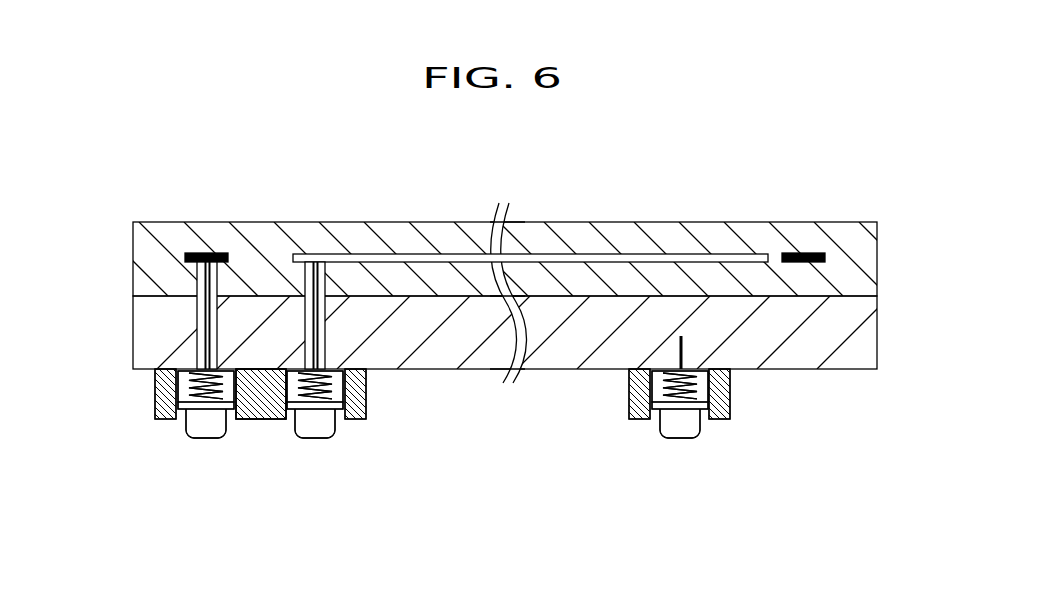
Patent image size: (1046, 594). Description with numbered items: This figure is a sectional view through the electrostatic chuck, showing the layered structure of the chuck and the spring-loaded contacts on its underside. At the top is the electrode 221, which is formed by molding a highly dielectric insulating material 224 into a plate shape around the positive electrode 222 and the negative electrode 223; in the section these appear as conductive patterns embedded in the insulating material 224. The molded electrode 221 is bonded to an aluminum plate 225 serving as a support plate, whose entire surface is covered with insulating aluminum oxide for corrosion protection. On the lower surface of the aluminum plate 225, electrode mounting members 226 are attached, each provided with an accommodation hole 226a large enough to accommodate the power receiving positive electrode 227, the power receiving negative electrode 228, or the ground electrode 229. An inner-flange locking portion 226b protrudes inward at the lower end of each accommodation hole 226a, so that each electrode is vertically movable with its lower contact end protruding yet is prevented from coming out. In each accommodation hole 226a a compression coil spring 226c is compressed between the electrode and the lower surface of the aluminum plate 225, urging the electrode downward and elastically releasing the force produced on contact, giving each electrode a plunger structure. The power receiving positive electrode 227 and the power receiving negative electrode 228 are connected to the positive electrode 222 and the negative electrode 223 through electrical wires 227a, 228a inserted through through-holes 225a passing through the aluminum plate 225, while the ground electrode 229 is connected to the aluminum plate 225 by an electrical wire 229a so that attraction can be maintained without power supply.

The electrode 221 is at (207, 253).
The positive electrode 222 is at (206, 257).
The negative electrode 223 is at (585, 256).
The insulating material 224 is at (868, 263).
The aluminum plate 225 is at (868, 337).
The through-hole 225a is at (256, 285).
The electrode mounting member 226 is at (153, 407).
The accommodation hole 226a is at (229, 418).
The inner-flange locking portion 226b is at (182, 421).
The compression coil spring 226c is at (186, 380).
The power receiving positive electrode 227 is at (205, 428).
The electrical wire 227a is at (207, 333).
The power receiving negative electrode 228 is at (316, 428).
The electrical wire 228a is at (322, 333).
The ground electrode 229 is at (681, 428).
The electrical wire 229a is at (683, 341).